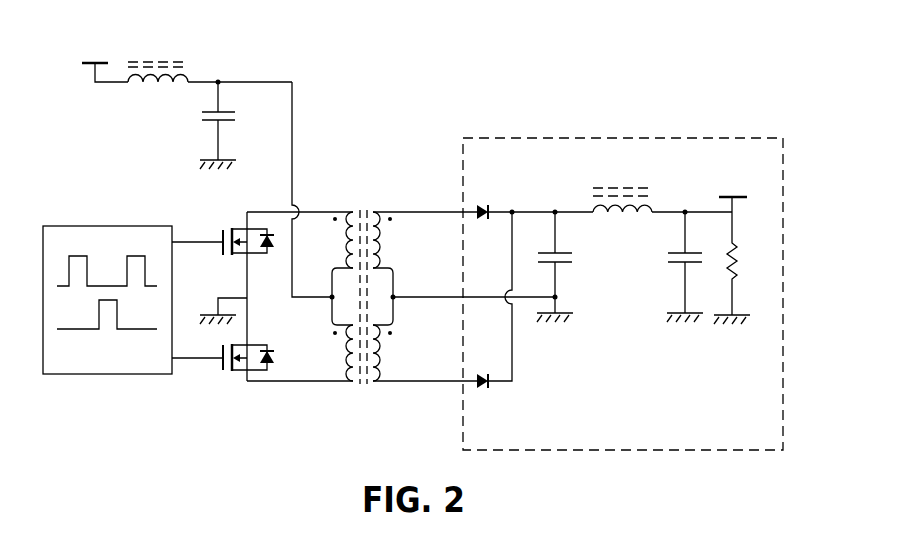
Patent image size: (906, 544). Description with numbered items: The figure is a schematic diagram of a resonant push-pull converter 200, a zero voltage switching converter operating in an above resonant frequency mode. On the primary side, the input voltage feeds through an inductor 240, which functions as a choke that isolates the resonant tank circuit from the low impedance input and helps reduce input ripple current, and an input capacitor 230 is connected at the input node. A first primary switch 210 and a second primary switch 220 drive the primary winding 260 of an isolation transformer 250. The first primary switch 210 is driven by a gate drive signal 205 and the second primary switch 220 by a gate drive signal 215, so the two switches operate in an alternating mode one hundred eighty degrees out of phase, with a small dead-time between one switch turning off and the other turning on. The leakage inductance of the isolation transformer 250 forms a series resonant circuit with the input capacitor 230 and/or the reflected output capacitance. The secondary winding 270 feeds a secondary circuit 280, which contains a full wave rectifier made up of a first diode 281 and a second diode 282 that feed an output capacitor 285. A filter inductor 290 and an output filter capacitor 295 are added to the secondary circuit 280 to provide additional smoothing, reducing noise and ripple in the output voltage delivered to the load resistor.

The resonant push-pull converter 200 is at (688, 26).
The gate drive signal 205 is at (187, 360).
The first primary switch 210 is at (238, 386).
The gate drive signal 215 is at (193, 240).
The second primary switch 220 is at (234, 203).
The input capacitor 230 is at (160, 119).
The inductor 240 is at (176, 44).
The isolation transformer 250 is at (364, 173).
The primary winding 260 is at (349, 258).
The secondary winding 270 is at (377, 258).
The secondary circuit 280 is at (706, 136).
The diode 281 is at (500, 185).
The diode 282 is at (500, 405).
The output capacitor 285 is at (592, 268).
The filter inductor 290 is at (640, 170).
The output filter capacitor 295 is at (650, 268).